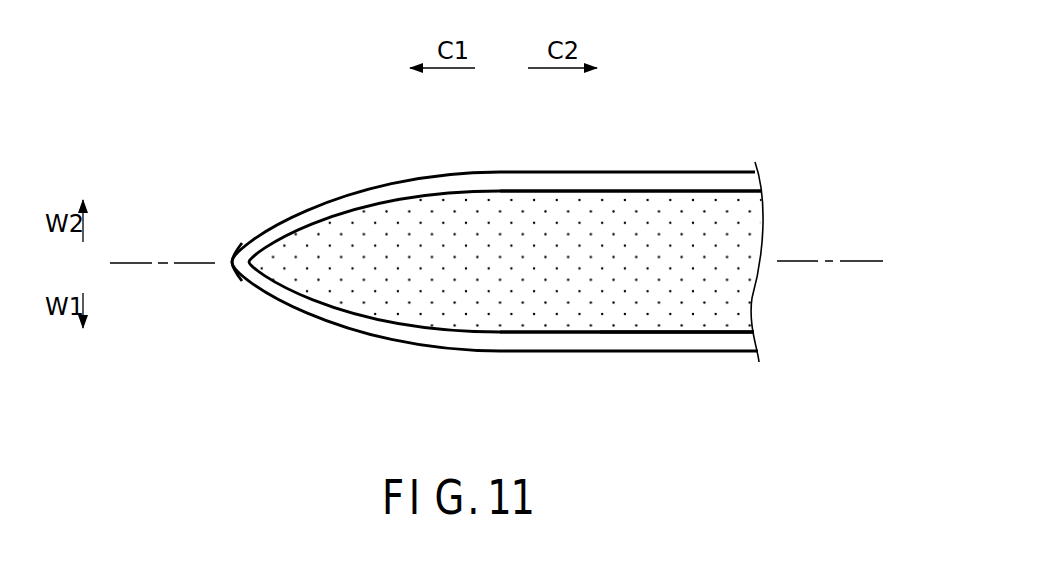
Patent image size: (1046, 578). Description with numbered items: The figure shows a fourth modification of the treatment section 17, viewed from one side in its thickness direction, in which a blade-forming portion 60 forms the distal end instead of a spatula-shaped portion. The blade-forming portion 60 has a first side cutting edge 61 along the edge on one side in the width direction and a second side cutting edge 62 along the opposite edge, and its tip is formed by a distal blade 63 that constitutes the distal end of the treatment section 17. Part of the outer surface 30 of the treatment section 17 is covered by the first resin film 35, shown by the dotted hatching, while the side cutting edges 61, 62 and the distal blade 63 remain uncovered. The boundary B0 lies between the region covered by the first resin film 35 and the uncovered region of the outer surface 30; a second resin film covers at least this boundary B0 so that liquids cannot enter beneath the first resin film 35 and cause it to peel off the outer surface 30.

The treatment section 17 is at (664, 148).
The second side cutting edge 62 is at (497, 172).
The distal blade 63 is at (230, 262).
The blade-forming portion 60 is at (427, 300).
The first side cutting edge 61 is at (472, 352).
The outer surface 30 is at (552, 343).
The first resin film 35 is at (668, 323).
The boundary B0 is at (568, 191).